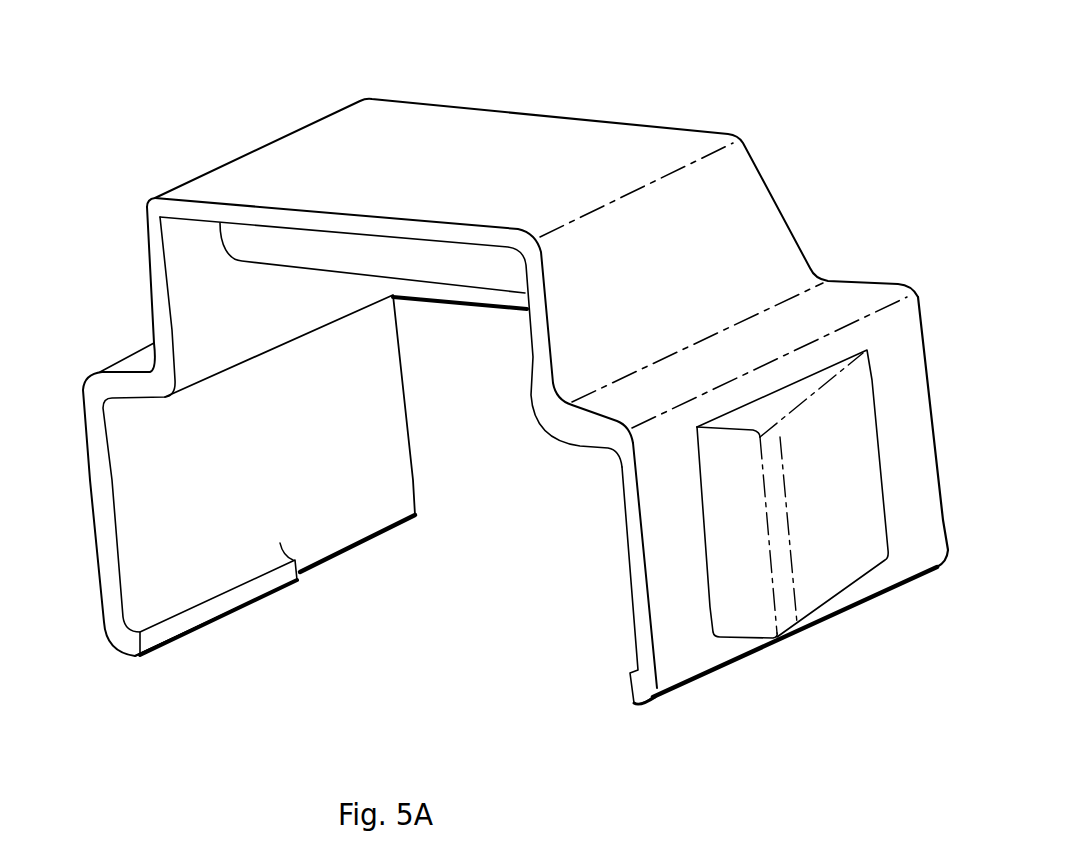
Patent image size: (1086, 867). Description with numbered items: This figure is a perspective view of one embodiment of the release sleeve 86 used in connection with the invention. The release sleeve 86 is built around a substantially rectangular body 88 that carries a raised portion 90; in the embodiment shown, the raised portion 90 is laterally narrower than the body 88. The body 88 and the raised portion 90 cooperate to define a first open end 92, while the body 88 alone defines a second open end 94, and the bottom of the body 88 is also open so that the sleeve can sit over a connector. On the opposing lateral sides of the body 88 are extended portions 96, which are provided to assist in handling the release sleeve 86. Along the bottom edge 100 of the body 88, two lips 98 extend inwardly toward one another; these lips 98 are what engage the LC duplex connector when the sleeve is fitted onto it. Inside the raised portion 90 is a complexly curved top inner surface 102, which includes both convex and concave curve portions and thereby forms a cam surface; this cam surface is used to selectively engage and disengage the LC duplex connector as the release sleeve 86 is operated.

The release sleeve 86 is at (280, 112).
The body 88 is at (907, 430).
The raised portion 90 is at (755, 220).
The first open end 92 is at (623, 530).
The second open end 94 is at (402, 375).
The extended portions 96 is at (847, 515).
The lips 98 is at (220, 607).
The bottom edge 100 is at (343, 553).
The curved top inner surface 102 is at (287, 252).